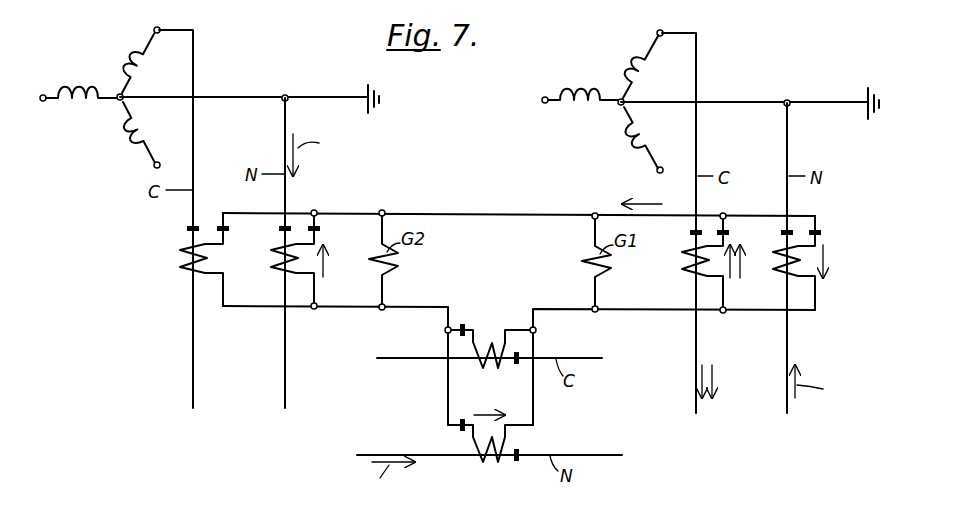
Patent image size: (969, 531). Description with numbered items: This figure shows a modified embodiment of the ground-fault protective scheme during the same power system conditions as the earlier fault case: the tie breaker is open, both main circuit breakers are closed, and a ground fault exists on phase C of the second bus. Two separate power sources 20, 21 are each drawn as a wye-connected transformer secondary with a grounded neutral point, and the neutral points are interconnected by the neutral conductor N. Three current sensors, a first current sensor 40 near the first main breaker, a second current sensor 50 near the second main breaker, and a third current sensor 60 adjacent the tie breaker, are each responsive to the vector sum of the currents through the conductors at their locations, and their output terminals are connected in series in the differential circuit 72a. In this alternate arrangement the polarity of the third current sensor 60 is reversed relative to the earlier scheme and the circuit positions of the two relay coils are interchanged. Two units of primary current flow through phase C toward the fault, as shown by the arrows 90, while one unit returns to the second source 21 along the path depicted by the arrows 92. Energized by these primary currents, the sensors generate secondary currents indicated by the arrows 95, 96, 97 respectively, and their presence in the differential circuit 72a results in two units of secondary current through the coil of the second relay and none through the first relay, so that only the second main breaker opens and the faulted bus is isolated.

The power source 20 is at (106, 67).
The power source 21 is at (611, 72).
The first current sensor 40 is at (258, 270).
The second current sensor 50 is at (772, 302).
The third current sensor 60 is at (505, 396).
The differential circuit 72a is at (471, 213).
The arrows 90 is at (712, 373).
The arrows 92 is at (569, 312).
The arrow 95 is at (328, 275).
The arrow 96 is at (470, 410).
The arrow 97 is at (648, 204).